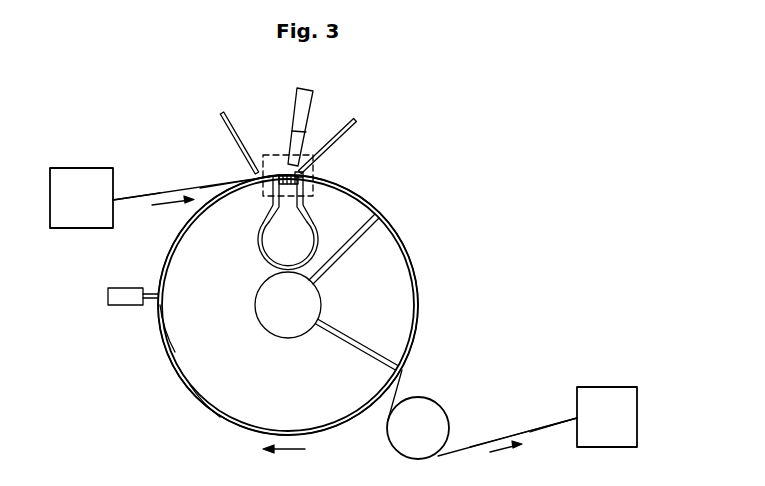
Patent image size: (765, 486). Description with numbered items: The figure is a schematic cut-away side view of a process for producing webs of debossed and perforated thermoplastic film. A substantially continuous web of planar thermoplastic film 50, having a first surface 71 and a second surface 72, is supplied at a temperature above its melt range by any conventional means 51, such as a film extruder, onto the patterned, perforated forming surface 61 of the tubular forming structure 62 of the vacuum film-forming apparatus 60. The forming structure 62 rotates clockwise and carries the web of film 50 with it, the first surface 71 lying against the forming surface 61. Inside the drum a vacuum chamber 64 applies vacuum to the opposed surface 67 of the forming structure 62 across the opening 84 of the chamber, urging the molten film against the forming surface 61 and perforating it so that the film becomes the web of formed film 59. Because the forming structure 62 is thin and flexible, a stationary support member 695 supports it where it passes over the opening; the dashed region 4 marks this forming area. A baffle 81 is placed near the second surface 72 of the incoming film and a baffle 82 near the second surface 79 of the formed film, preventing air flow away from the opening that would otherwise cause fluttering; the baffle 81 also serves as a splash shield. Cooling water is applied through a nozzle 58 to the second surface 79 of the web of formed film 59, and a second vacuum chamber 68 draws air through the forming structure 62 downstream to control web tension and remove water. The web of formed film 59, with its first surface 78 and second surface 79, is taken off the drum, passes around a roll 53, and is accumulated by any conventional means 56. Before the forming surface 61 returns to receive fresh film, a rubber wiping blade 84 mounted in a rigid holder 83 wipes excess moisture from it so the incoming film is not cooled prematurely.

The dashed region / station 4 is at (273, 155).
The web of film 50 is at (153, 191).
The conventional means 51 is at (63, 168).
The roll 53 is at (433, 399).
The conventional means 56 is at (620, 387).
The nozzle 58 is at (313, 110).
The web of formed film 59 is at (461, 451).
The vacuum film-forming apparatus 60 is at (448, 212).
The forming surface 61 is at (220, 417).
The forming structure 62 is at (184, 381).
The vacuum chamber 64 is at (275, 238).
The opposed surface 67 is at (175, 352).
The vacuum chamber 68 is at (370, 333).
The support member 695 is at (292, 188).
The first surface 71 is at (133, 199).
The second surface 72 is at (210, 181).
The first surface 78 is at (556, 427).
The second surface 79 is at (537, 428).
The baffle 81 is at (222, 115).
The baffle 82 is at (355, 122).
The rigid holder 83 is at (117, 288).
The opening of vacuum chamber / rubber wiping blade 84 is at (300, 175).